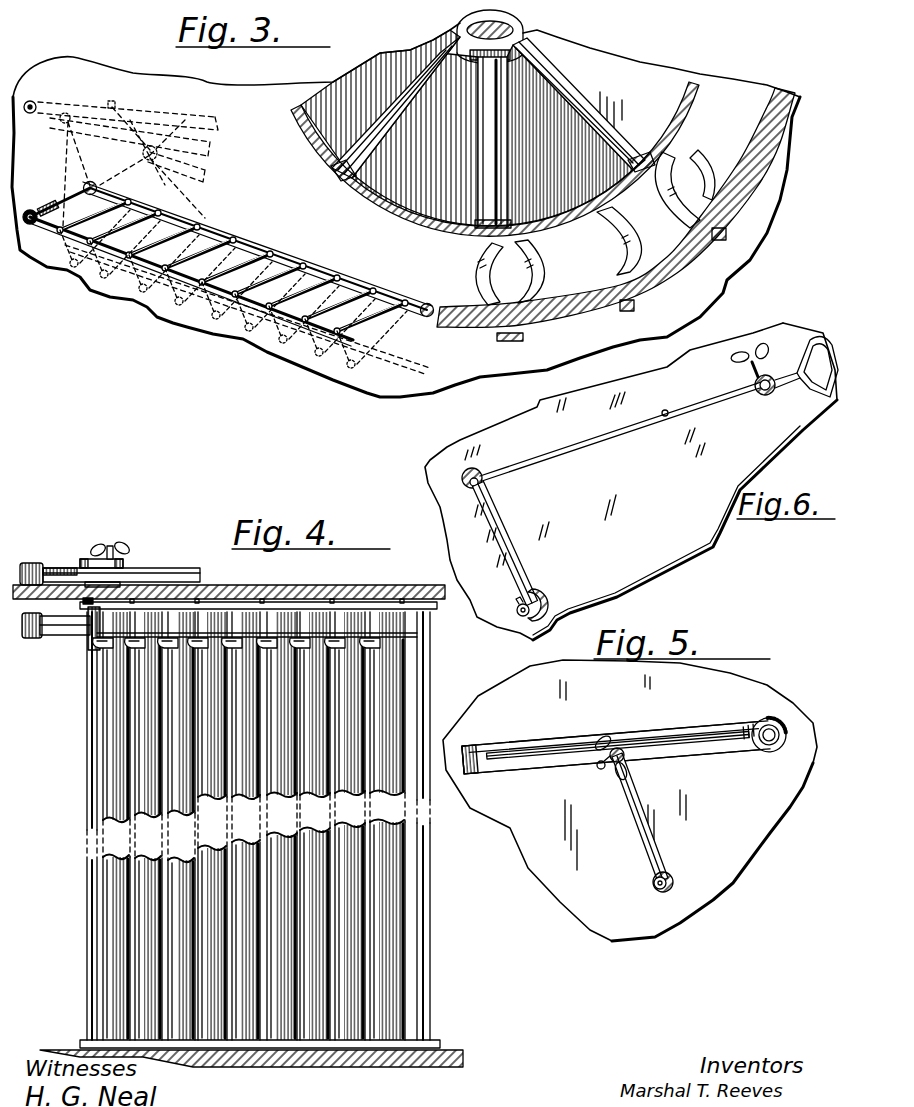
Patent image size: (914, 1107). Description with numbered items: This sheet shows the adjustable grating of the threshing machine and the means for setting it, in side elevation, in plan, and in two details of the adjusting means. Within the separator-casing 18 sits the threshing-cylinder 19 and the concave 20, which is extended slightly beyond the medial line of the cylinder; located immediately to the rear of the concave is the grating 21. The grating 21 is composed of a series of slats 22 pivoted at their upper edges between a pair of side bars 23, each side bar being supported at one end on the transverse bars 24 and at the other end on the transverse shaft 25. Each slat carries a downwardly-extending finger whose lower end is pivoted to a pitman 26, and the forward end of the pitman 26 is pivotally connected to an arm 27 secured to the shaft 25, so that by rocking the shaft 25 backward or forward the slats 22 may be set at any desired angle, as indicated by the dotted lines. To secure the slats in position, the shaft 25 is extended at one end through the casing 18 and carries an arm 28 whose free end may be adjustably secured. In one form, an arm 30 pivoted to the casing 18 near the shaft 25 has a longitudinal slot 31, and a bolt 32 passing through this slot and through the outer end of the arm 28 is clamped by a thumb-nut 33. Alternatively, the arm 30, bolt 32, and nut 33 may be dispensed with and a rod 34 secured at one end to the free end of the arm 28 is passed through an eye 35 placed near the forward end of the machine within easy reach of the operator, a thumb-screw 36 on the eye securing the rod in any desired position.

In FIG. 3, the separator-casing 18 is at (222, 93).
In FIG. 4, the separator-casing 18 is at (310, 589).
In FIG. 3, the threshing-cylinder 19 is at (503, 157).
In FIG. 3, the concave 20 is at (752, 152).
In FIG. 3, the grating 21 is at (257, 244).
In FIG. 3, the slats 22 is at (322, 265).
In FIG. 4, the slats 22 is at (145, 712).
In FIG. 3, the side bars 23 is at (355, 283).
In FIG. 4, the side bars 23 is at (240, 605).
In FIG. 3, the transverse bars 24 is at (432, 303).
In FIG. 4, the transverse bars 24 is at (426, 697).
In FIG. 3, the transverse shaft 25 is at (85, 185).
In FIG. 4, the transverse shaft 25 is at (88, 766).
In FIG. 6, the transverse shaft 25 is at (515, 614).
In FIG. 5, the transverse shaft 25 is at (668, 889).
In FIG. 3, the pitman 26 is at (62, 236).
In FIG. 4, the pitman 26 is at (60, 635).
In FIG. 3, the arm 27 is at (55, 205).
In FIG. 4, the arm 27 is at (36, 639).
In FIG. 3, the arm 28 is at (125, 168).
In FIG. 4, the arm 28 is at (95, 560).
In FIG. 6, the arm 28 is at (528, 562).
In FIG. 5, the arm 28 is at (670, 846).
In FIG. 3, the arm 30 is at (215, 122).
In FIG. 4, the arm 30 is at (160, 571).
In FIG. 5, the arm 30 is at (712, 723).
In FIG. 5, the longitudinal slot 31 is at (675, 738).
In FIG. 4, the bolt 32 is at (112, 546).
In FIG. 5, the bolt 32 is at (602, 770).
In FIG. 4, the thumb-nut 33 is at (128, 553).
In FIG. 5, the thumb-nut 33 is at (640, 772).
In FIG. 6, the rod 34 is at (635, 431).
In FIG. 6, the eye 35 is at (765, 396).
In FIG. 6, the thumb-screw 36 is at (731, 357).